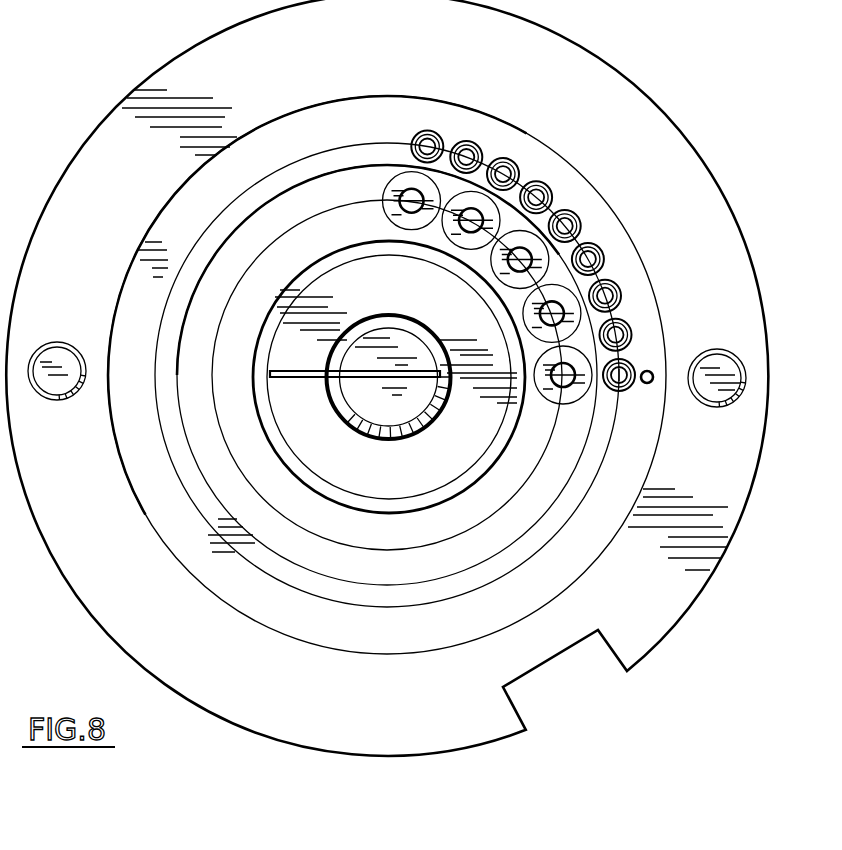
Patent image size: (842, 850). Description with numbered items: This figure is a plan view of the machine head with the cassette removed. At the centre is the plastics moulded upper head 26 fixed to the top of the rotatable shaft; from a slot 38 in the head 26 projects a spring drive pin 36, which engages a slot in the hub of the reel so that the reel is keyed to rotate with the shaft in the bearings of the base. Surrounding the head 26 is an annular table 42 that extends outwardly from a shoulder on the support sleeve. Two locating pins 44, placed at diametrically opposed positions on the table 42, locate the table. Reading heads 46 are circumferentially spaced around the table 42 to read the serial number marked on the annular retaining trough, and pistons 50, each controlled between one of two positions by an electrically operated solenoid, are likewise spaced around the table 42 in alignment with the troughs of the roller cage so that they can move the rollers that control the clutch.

The upper head 26 is at (351, 271).
The spring drive pin 36 is at (310, 380).
The slot 38 is at (423, 375).
The annular table 42 is at (402, 60).
The locating pins 44 is at (57, 343).
The reading heads 46 is at (610, 283).
The pistons 50 is at (543, 248).